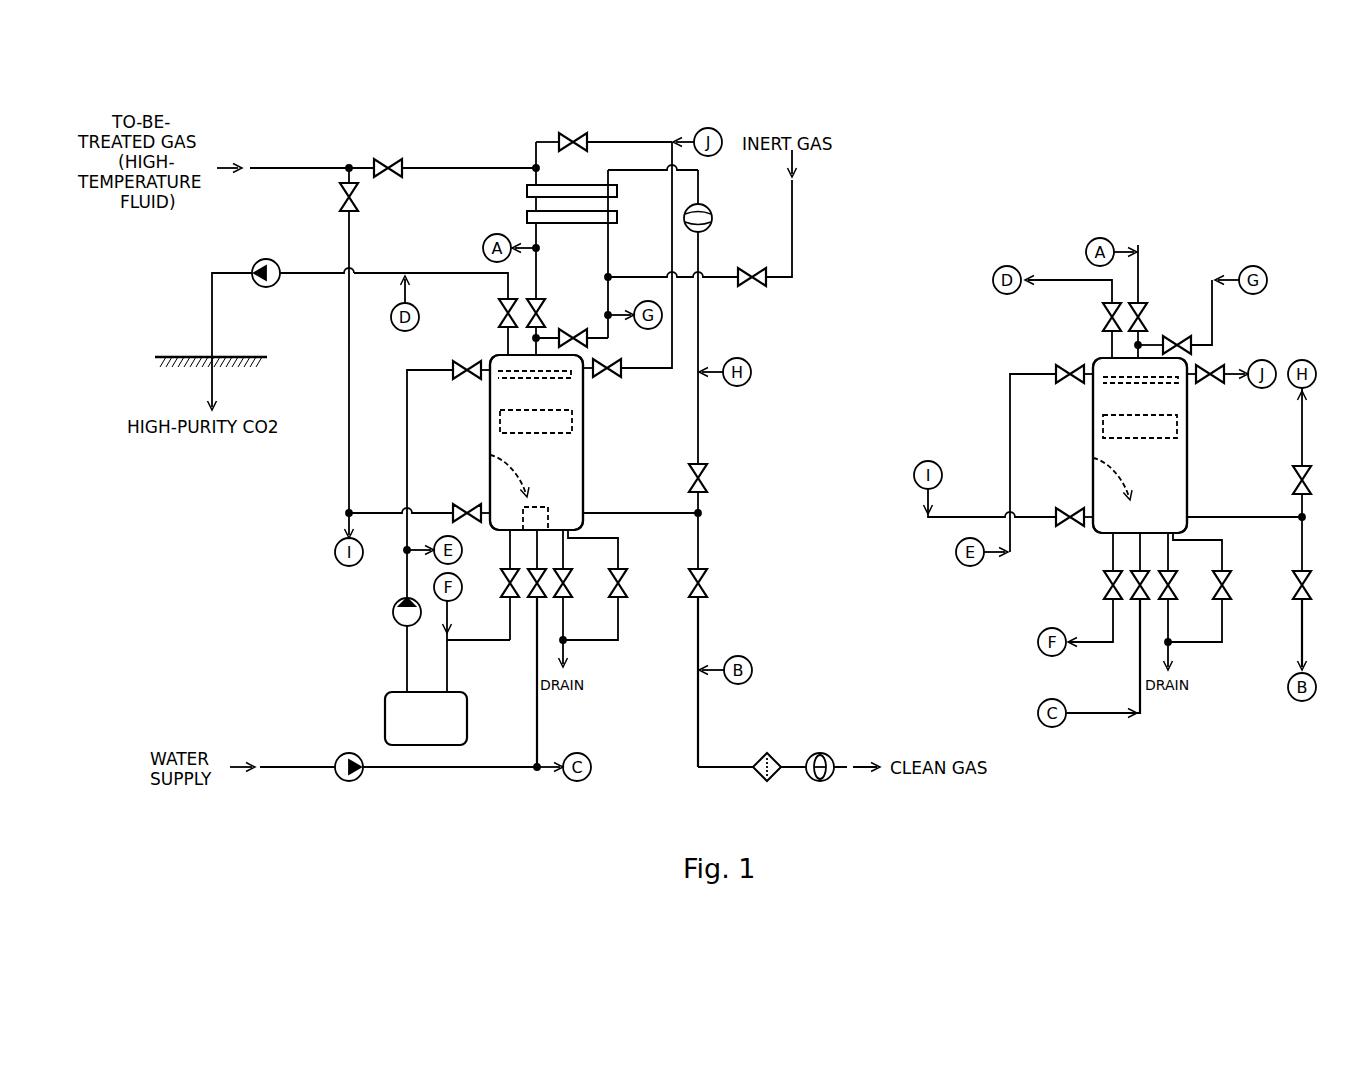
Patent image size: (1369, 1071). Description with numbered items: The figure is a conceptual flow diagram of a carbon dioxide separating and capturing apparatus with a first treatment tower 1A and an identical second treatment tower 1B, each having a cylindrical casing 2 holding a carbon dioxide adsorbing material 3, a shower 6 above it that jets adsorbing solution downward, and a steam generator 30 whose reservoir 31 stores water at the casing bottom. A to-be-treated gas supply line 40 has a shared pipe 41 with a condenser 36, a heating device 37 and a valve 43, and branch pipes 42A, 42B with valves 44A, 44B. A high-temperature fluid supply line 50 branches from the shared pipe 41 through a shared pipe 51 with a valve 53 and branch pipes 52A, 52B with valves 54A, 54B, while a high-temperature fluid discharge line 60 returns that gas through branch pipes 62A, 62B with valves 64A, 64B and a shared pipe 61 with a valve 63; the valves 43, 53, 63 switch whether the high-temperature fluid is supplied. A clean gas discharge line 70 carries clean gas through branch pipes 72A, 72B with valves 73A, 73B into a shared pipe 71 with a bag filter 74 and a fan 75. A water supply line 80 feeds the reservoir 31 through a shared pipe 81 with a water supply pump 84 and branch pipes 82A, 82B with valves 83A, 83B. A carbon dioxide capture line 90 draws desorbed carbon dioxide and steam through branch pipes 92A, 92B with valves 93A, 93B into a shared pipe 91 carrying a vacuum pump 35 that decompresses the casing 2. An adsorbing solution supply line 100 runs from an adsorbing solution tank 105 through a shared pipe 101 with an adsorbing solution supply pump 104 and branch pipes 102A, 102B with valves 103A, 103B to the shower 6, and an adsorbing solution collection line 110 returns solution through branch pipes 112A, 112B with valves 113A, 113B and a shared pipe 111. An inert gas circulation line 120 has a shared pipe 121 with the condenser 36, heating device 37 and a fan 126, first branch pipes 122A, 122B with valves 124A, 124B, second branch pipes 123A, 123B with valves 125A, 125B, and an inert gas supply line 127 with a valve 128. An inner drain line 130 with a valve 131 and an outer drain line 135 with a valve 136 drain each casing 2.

The first treatment tower 1A is at (550, 460).
The second treatment tower 1B is at (1153, 460).
The casing 2 is at (563, 470).
The carbon dioxide adsorbing material 3 is at (500, 426).
The shower 6 is at (490, 386).
The steam generator 30 is at (490, 456).
The reservoir 31 is at (548, 505).
The vacuum pump 35 is at (265, 288).
The condenser 36 is at (527, 191).
The heating device 37 is at (527, 217).
The to-be-treated gas supply line 40 is at (418, 160).
The shared pipe 41 is at (462, 166).
The branch pipe 42A is at (540, 262).
The branch pipe 42B is at (1142, 262).
The valve 43 is at (388, 159).
The valve 44A is at (540, 295).
The valve 44B is at (1142, 295).
The high-temperature fluid supply line 50 is at (340, 234).
The shared pipe 51 is at (345, 494).
The branch pipe 52A is at (375, 512).
The branch pipe 52B is at (975, 512).
The valve 53 is at (340, 200).
The valve 54A is at (465, 500).
The valve 54B is at (1066, 500).
The high-temperature fluid discharge line 60 is at (608, 140).
The shared pipe 61 is at (646, 140).
The branch pipe 62A is at (665, 382).
The branch pipe 62B is at (1245, 382).
The valve 63 is at (572, 135).
The valve 64A is at (607, 382).
The valve 64B is at (1210, 382).
The clean gas discharge line 70 is at (712, 778).
The shared pipe 71 is at (740, 775).
The branch pipe 72A is at (703, 633).
The branch pipe 72B is at (1306, 633).
The valve 73A is at (703, 580).
The valve 73B is at (1310, 582).
The bag filter 74 is at (772, 783).
The fan 75 is at (835, 783).
The water supply line 80 is at (310, 778).
The shared pipe 81 is at (455, 775).
The branch pipe 82A is at (537, 728).
The branch pipe 82B is at (1138, 693).
The valve 83A is at (535, 625).
The valve 83B is at (1135, 625).
The water supply pump 84 is at (357, 782).
The carbon dioxide capture line 90 is at (205, 284).
The shared pipe 91 is at (312, 278).
The branch pipe 92A is at (382, 272).
The branch pipe 92B is at (1045, 278).
The valve 93A is at (498, 310).
The valve 93B is at (1100, 316).
The adsorbing solution supply line 100 is at (395, 568).
The shared pipe 101 is at (405, 630).
The branch pipe 102A is at (405, 405).
The branch pipe 102B is at (1008, 405).
The valve 103A is at (460, 362).
The valve 103B is at (1065, 362).
The adsorbing solution supply pump 104 is at (395, 604).
The adsorbing solution tank 105 is at (385, 715).
The adsorbing solution collection line 110 is at (440, 655).
The shared pipe 111 is at (445, 668).
The branch pipe 112A is at (473, 640).
The branch pipe 112B is at (1090, 640).
The valve 113A is at (510, 620).
The valve 113B is at (1102, 585).
The inert gas circulation line 120 is at (705, 342).
The shared pipe 121 is at (700, 333).
The first branch pipe 122A is at (702, 432).
The first branch pipe 122B is at (1304, 432).
The second branch pipe 123A is at (608, 328).
The second branch pipe 123B is at (1220, 293).
The valve 124A is at (712, 480).
The valve 124B is at (1312, 480).
The valve 125A is at (566, 338).
The valve 125B is at (1175, 340).
The fan 126 is at (708, 212).
The inert gas supply line 127 is at (792, 250).
The valve 128 is at (748, 268).
The inner drain line 130 is at (566, 633).
The valve 131 is at (568, 580).
The outer drain line 135 is at (625, 633).
The valve 136 is at (625, 580).